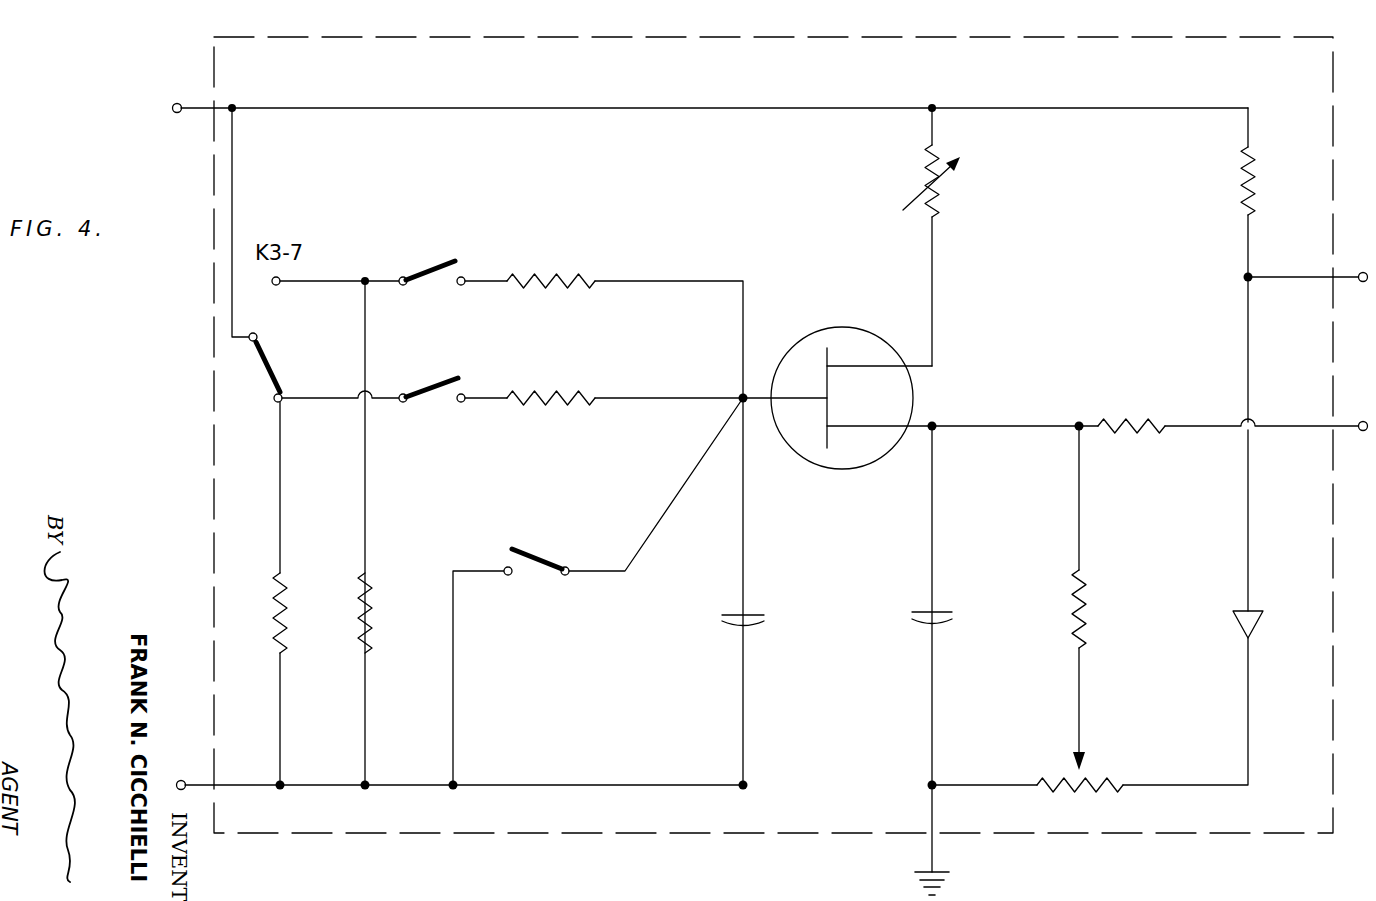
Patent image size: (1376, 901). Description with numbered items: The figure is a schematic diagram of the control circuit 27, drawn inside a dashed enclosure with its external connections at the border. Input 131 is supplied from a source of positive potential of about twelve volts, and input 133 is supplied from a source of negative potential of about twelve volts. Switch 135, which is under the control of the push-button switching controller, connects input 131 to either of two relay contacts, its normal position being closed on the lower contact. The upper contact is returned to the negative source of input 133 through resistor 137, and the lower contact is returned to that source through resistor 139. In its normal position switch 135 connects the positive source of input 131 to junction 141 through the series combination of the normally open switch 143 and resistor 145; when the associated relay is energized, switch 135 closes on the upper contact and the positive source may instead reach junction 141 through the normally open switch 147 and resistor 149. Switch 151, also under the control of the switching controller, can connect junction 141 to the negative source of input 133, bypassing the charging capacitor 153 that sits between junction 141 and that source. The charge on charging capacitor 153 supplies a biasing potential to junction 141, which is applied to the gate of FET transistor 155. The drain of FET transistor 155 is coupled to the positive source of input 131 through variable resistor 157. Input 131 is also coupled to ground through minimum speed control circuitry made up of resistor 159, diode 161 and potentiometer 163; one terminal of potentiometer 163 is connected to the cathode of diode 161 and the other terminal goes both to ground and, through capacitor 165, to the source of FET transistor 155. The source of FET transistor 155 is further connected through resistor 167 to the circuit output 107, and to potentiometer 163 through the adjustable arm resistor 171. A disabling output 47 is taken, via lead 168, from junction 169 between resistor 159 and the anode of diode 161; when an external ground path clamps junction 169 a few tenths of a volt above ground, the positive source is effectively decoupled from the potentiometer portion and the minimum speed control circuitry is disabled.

The control circuit 27 is at (888, 36).
The disabling output 47 is at (1364, 272).
The circuit output 107 is at (1364, 421).
The input 131 is at (177, 113).
The input 133 is at (186, 783).
The switch 135 is at (282, 368).
The resistor 137 is at (371, 612).
The resistor 139 is at (284, 612).
The junction 141 is at (743, 395).
The normally open switch 143 is at (455, 378).
The resistor 145 is at (556, 395).
The normally open switch 147 is at (445, 262).
The resistor 149 is at (552, 278).
The switch 151 is at (533, 550).
The charging capacitor 153 is at (766, 616).
The FET transistor 155 is at (890, 300).
The variable resistor 157 is at (940, 194).
The resistor 159 is at (1244, 186).
The diode 161 is at (1256, 620).
The potentiometer 163 is at (1090, 780).
The capacitor 165 is at (912, 614).
The resistor 167 is at (1170, 393).
The lead 168 is at (1300, 275).
The junction 169 is at (1244, 277).
The resistor 171 is at (1086, 610).